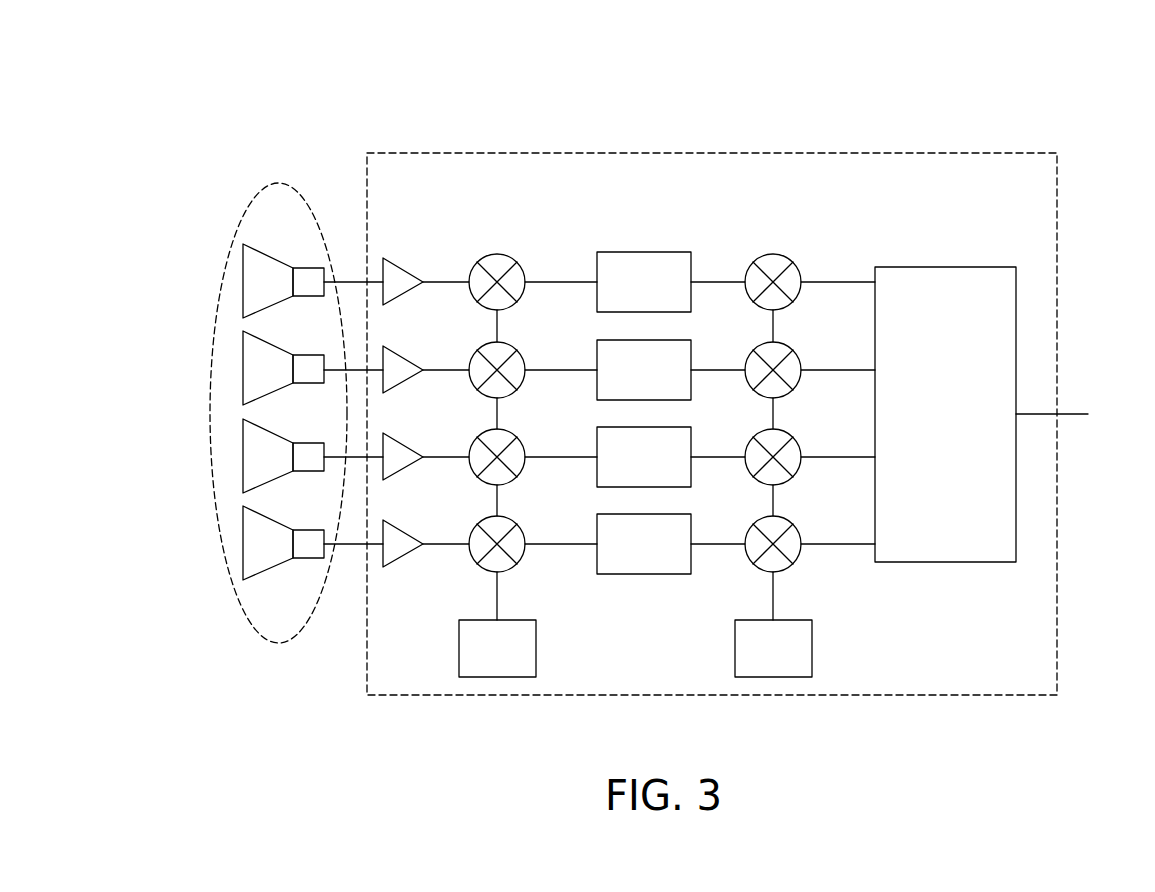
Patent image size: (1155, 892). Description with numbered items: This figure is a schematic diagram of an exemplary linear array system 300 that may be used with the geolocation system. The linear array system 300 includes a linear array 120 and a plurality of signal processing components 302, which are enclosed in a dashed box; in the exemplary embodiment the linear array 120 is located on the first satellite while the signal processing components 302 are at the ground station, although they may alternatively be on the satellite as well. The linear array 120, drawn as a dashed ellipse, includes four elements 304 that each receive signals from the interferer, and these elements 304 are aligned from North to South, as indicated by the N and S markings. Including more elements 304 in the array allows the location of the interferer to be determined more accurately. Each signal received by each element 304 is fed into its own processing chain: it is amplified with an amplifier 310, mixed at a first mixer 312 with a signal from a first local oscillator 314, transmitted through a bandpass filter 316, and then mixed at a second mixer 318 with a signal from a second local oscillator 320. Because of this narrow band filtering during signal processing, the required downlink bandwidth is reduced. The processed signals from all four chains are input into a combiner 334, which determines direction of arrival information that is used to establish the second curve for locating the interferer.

The linear array system 300 is at (987, 112).
The signal processing components 302 is at (430, 152).
The linear array 120 is at (250, 207).
The elements 304 is at (262, 282).
The amplifier 310 is at (398, 272).
The first mixer 312 is at (499, 254).
The first local oscillator 314 is at (515, 620).
The bandpass filter 316 is at (636, 252).
The second mixer 318 is at (773, 254).
The second local oscillator 320 is at (792, 620).
The combiner 334 is at (913, 267).